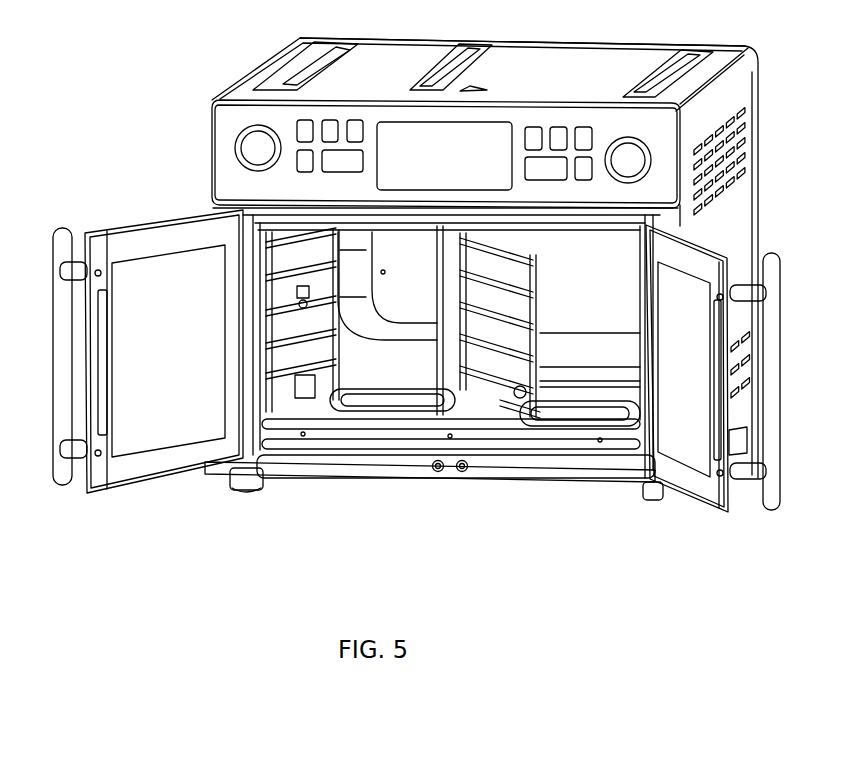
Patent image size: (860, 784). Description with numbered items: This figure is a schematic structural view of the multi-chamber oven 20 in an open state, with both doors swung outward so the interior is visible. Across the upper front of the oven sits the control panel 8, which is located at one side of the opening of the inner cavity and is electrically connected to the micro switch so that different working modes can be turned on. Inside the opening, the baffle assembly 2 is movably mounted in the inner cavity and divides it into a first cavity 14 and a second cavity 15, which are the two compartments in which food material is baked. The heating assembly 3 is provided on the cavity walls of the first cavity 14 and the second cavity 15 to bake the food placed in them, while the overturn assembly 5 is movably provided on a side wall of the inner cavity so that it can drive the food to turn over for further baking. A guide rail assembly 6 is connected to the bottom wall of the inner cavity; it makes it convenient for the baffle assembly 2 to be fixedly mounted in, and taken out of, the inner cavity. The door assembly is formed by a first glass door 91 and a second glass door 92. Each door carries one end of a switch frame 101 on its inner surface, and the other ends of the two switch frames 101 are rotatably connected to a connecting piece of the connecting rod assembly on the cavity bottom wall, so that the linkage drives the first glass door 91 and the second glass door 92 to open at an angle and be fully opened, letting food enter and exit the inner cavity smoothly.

The multi-chamber oven 20 is at (357, 73).
The control panel 8 is at (230, 143).
The baffle assembly 2 is at (457, 355).
The first cavity 14 is at (373, 343).
The second cavity 15 is at (596, 323).
The overturn assembly 5 is at (300, 308).
The guide rail assembly 6 is at (508, 400).
The heating assembly 3 is at (547, 407).
The first glass door 91 is at (145, 417).
The second glass door 92 is at (693, 407).
The switch frame 101 is at (232, 485).